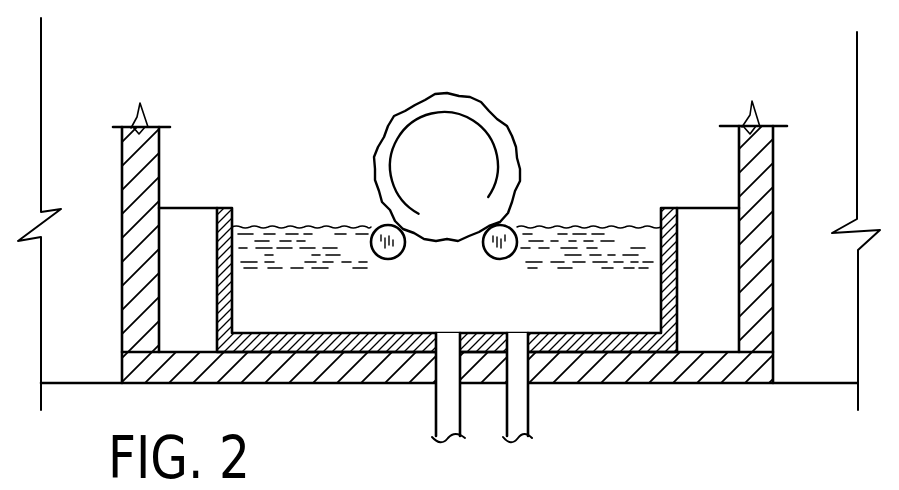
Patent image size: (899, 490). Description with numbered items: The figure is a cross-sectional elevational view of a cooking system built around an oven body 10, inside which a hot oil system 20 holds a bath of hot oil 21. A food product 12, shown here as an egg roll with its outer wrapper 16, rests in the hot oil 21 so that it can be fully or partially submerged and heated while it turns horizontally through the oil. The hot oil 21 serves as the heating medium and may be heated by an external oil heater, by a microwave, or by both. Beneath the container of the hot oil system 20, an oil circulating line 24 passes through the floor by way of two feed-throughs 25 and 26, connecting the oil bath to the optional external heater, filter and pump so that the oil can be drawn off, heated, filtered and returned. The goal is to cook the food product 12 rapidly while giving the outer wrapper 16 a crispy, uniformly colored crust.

The oven body 10 is at (135, 247).
The food product 12 is at (425, 145).
The outer wrapper 16 is at (487, 107).
The hot oil system 20 is at (673, 305).
The hot oil 21 is at (592, 293).
The oil circulating line 24 is at (447, 417).
The feed-through 25 is at (420, 384).
The feed-through 26 is at (530, 367).